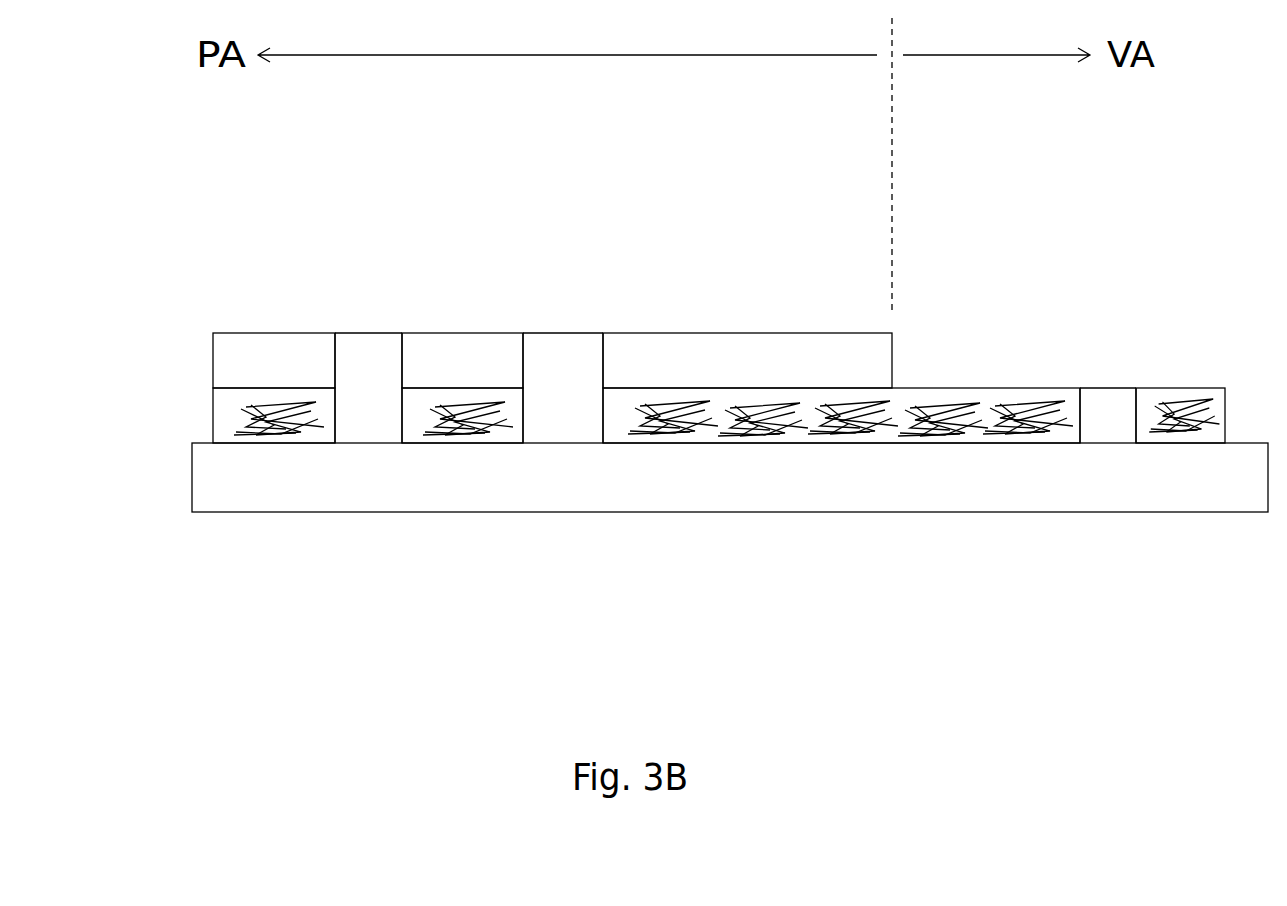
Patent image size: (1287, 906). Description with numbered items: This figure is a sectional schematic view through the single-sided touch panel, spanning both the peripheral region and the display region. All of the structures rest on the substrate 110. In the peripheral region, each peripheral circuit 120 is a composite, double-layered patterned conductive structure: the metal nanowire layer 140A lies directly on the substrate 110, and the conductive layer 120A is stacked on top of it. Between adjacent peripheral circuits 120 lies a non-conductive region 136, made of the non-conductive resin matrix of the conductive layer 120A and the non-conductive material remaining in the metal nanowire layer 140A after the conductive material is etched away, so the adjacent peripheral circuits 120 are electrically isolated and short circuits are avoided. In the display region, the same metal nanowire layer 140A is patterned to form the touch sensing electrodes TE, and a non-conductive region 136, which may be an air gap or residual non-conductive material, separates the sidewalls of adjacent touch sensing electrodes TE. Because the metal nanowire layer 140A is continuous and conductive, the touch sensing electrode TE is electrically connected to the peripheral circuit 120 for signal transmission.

The substrate 110 is at (1123, 490).
The peripheral circuit 120 is at (534, 255).
The conductive layer 120A is at (313, 377).
The non-conductive region 136 is at (368, 350).
The metal nanowire layer 140A is at (661, 437).
The touch sensing electrode TE is at (1042, 435).